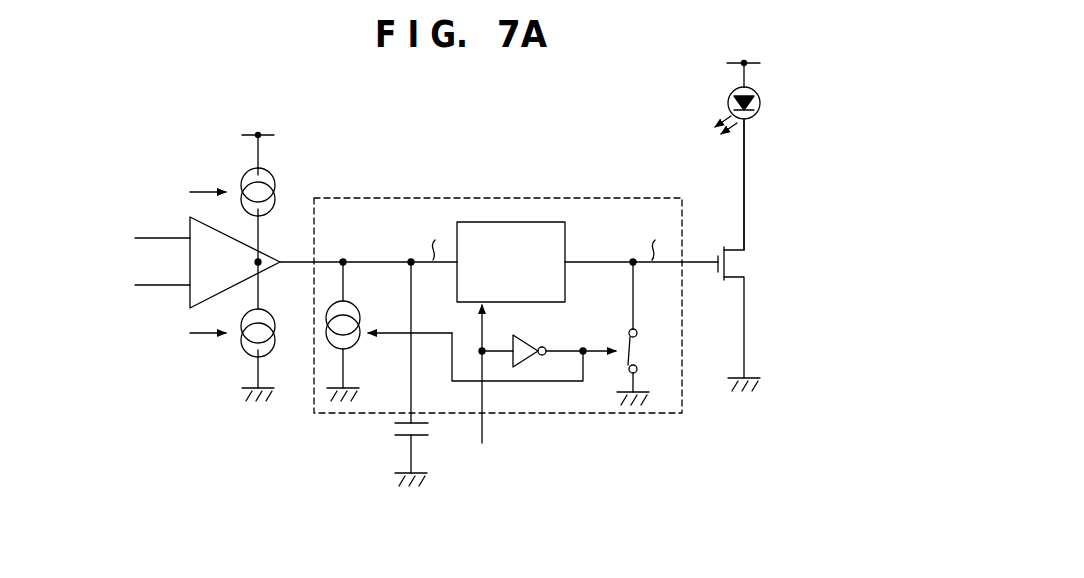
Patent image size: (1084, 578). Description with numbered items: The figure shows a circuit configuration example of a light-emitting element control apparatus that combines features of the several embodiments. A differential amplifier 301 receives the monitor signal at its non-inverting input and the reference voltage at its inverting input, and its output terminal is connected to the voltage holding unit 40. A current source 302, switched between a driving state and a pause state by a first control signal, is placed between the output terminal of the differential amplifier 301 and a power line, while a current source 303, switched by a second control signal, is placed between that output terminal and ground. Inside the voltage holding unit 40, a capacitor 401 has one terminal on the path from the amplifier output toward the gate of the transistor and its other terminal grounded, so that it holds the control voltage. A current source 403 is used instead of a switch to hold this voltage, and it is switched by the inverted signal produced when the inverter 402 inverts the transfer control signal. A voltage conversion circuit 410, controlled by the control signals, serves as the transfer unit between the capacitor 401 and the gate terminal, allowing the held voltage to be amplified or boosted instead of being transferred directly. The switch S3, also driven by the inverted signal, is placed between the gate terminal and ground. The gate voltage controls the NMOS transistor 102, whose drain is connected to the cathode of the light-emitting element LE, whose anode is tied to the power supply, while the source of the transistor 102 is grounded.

The differential amplifier 301 is at (268, 257).
The current source 302 is at (271, 176).
The current source 303 is at (246, 353).
The voltage holding unit 40 is at (414, 197).
The voltage conversion circuit 410 is at (513, 221).
The current source 403 is at (352, 350).
The capacitor 401 is at (393, 426).
The inverter 402 is at (528, 366).
The NMOS transistor 102 is at (750, 263).
The switch S3 is at (639, 333).
The light-emitting element LE is at (760, 100).